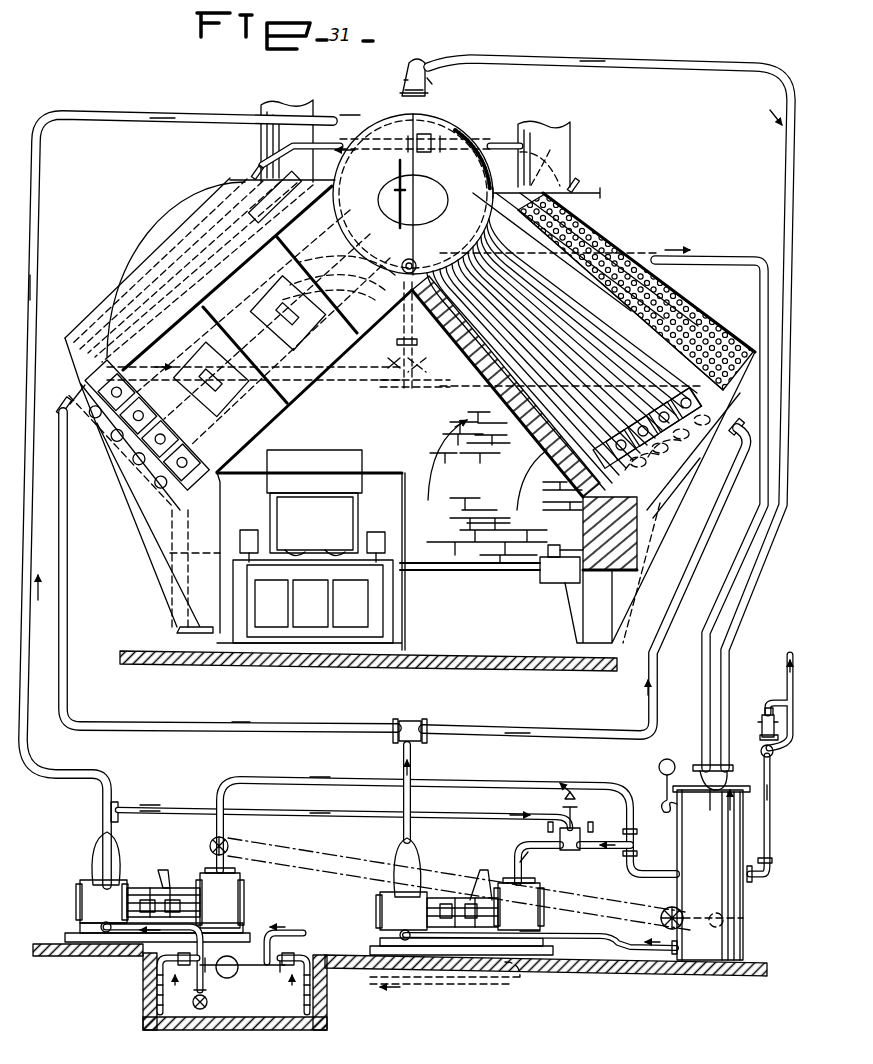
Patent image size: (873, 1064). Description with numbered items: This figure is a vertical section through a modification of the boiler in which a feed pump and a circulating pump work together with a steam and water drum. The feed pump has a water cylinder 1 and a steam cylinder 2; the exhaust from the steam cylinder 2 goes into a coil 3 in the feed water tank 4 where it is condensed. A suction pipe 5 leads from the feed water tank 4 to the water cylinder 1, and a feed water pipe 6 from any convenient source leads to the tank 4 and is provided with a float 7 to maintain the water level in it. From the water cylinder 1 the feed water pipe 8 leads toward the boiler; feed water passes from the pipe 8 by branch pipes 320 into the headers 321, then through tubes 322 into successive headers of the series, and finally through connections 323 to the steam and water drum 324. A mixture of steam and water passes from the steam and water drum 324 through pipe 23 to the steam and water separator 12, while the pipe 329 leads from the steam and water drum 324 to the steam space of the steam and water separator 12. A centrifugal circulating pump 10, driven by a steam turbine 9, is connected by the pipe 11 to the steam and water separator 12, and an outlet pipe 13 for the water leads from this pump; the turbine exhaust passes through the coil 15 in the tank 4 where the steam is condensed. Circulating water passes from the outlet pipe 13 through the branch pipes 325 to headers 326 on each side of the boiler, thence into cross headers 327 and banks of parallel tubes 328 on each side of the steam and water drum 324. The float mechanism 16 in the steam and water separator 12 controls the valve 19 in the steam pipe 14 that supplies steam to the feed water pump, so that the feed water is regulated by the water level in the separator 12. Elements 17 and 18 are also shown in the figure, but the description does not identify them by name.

The water cylinder 1 is at (80, 897).
The steam cylinder 2 is at (236, 900).
The coil 3 is at (155, 998).
The feed water tank 4 is at (240, 1020).
The suction pipe 5 is at (206, 998).
The feed water pipe 6 is at (290, 935).
The float 7 is at (238, 970).
The feed water pipe 8 is at (84, 784).
The steam turbine 9 is at (540, 910).
The centrifugal circulating pump 10 is at (380, 908).
The pipe 11 is at (618, 952).
The steam and water separator 12 is at (752, 902).
The outlet pipe 13 is at (413, 752).
The steam pipe 14 is at (368, 780).
The coil 15 is at (315, 1000).
The float mechanism 16 is at (706, 916).
The valve 17 is at (661, 916).
The control line 18 is at (360, 850).
The valve 19 is at (228, 844).
The pipe 23 is at (705, 660).
The branch pipes 320 is at (256, 168).
The headers 321 is at (210, 194).
The tubes 322 is at (625, 240).
The connections 323 is at (400, 382).
The steam and water drum 324 is at (438, 120).
The branch pipes 325 is at (352, 726).
The headers 326 is at (78, 396).
The cross headers 327 is at (675, 495).
The banks of parallel tubes 328 is at (665, 320).
The pipe 329 is at (600, 70).